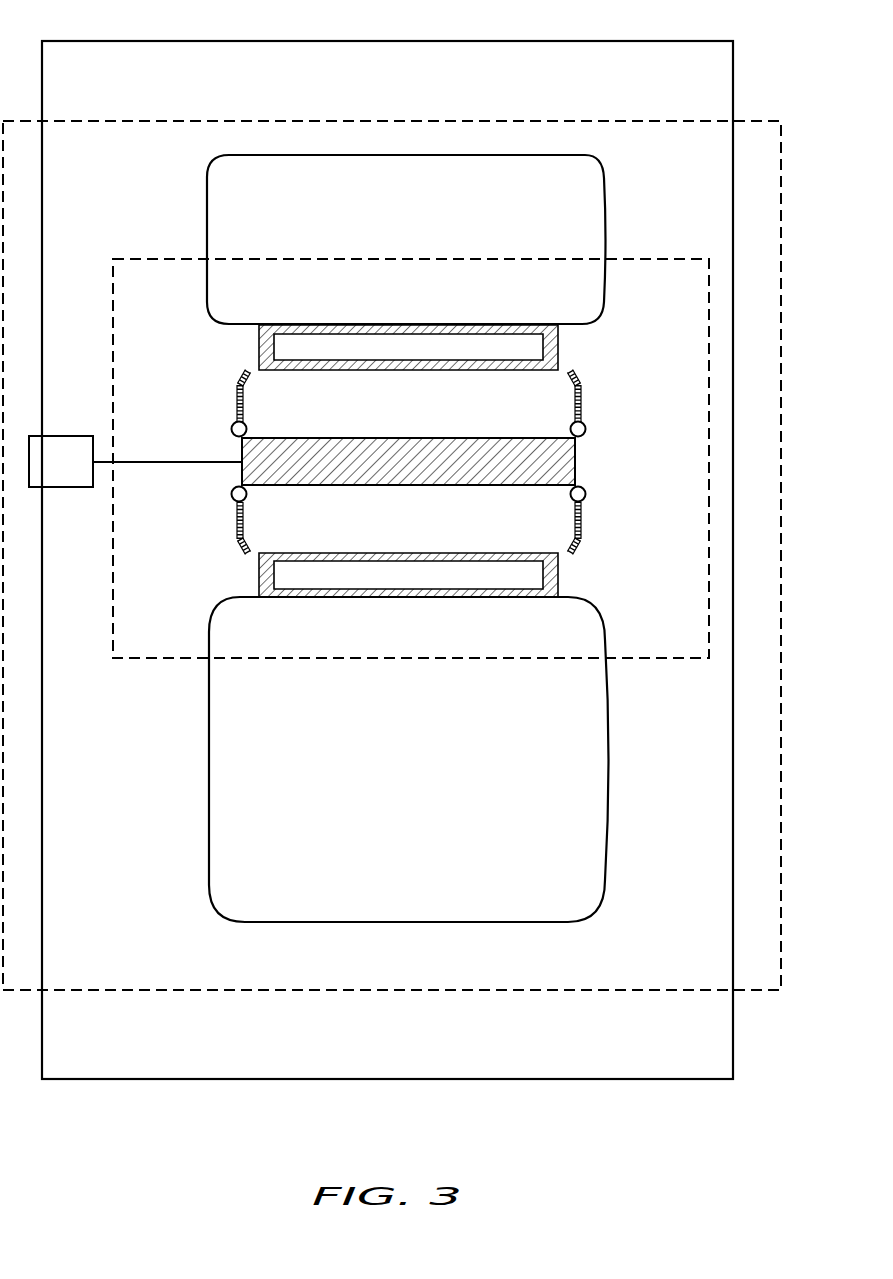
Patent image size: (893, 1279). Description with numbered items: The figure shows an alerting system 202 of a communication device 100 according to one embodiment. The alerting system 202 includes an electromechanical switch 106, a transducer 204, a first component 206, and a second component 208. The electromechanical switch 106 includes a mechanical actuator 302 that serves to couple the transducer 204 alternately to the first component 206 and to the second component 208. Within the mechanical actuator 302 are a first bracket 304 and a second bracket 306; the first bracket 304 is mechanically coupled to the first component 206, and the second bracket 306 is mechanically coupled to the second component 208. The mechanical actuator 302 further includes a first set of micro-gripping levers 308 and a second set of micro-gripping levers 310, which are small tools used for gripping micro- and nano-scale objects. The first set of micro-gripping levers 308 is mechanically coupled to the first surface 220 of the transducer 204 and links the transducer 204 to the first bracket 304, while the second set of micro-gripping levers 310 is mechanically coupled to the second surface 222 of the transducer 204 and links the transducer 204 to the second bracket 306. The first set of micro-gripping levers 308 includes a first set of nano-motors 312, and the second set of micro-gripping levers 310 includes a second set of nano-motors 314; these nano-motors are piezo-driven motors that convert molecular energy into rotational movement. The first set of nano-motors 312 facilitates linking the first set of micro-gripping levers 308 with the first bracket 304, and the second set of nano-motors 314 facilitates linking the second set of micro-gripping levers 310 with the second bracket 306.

The communication device 100 is at (718, 41).
The electromechanical switch 106 is at (70, 435).
The alerting system 202 is at (770, 121).
The transducer 204 is at (577, 462).
The first component 206 is at (605, 200).
The second component 208 is at (606, 760).
The first surface 220 is at (409, 438).
The second surface 222 is at (409, 485).
The mechanical actuator 302 is at (127, 259).
The first bracket 304 is at (259, 345).
The second bracket 306 is at (259, 575).
The first set of micro-gripping levers 308 is at (233, 400).
The second set of micro-gripping levers 310 is at (233, 529).
The first set of nano-motors 312 is at (231, 430).
The second set of nano-motors 314 is at (231, 494).